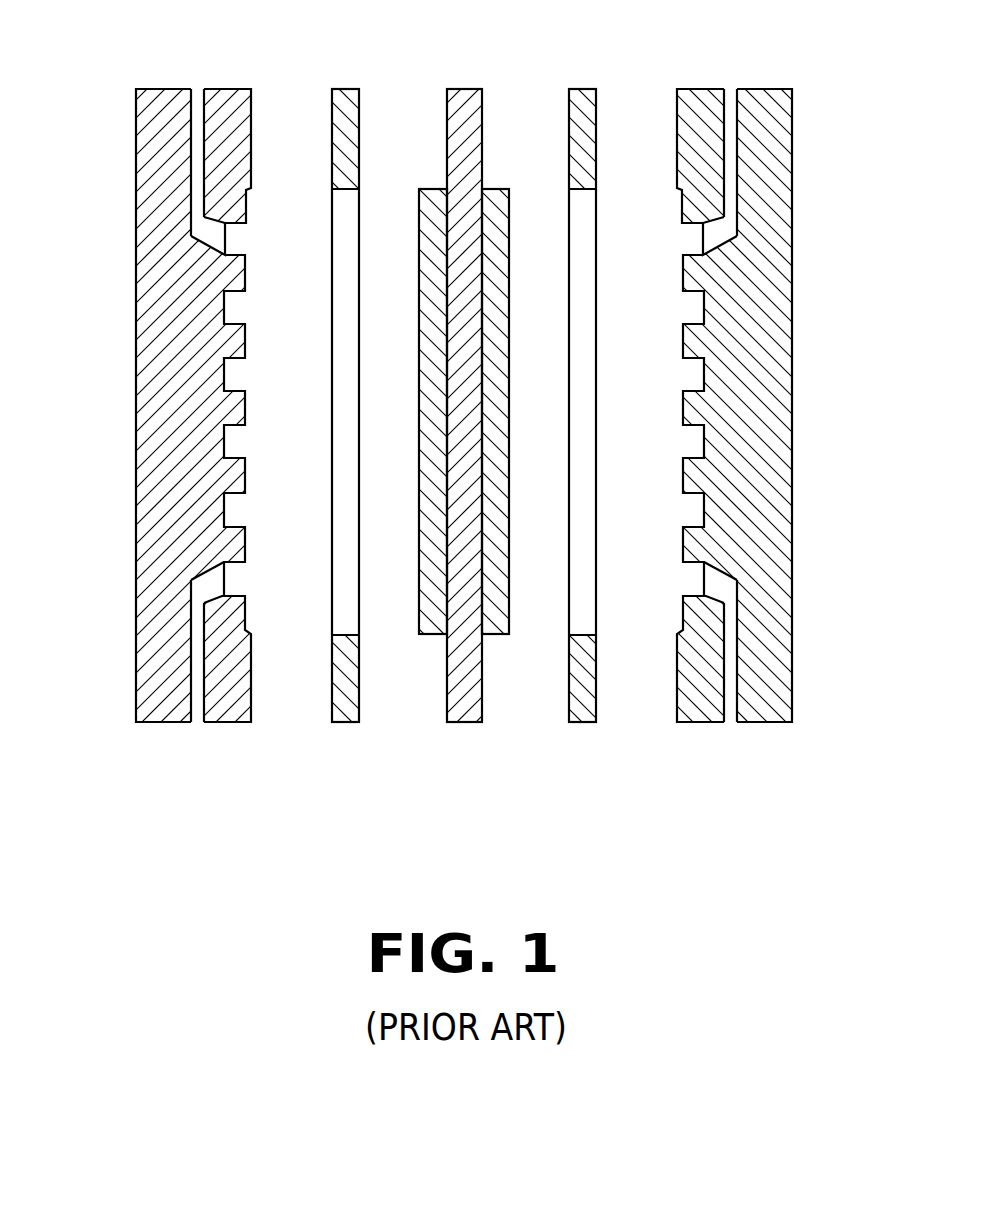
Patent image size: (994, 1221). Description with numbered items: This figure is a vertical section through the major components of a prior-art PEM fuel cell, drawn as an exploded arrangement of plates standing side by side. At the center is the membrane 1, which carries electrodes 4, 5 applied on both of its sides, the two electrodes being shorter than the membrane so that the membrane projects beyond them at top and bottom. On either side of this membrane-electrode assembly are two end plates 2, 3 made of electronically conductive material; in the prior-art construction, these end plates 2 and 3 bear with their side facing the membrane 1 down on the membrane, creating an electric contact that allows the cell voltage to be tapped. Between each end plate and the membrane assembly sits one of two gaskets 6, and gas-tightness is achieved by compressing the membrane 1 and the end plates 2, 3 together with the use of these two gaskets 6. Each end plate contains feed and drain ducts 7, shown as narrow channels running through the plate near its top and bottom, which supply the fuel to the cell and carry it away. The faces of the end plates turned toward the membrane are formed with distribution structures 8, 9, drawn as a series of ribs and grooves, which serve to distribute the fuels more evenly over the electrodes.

The membrane 1 is at (465, 718).
The end plate 2 is at (784, 372).
The end plate 3 is at (160, 367).
The electrode 4 is at (435, 631).
The electrode 5 is at (500, 631).
The gasket 6 is at (580, 89).
The feed and drain duct 7 is at (198, 96).
The distribution structure 8 is at (683, 505).
The distribution structure 9 is at (239, 513).